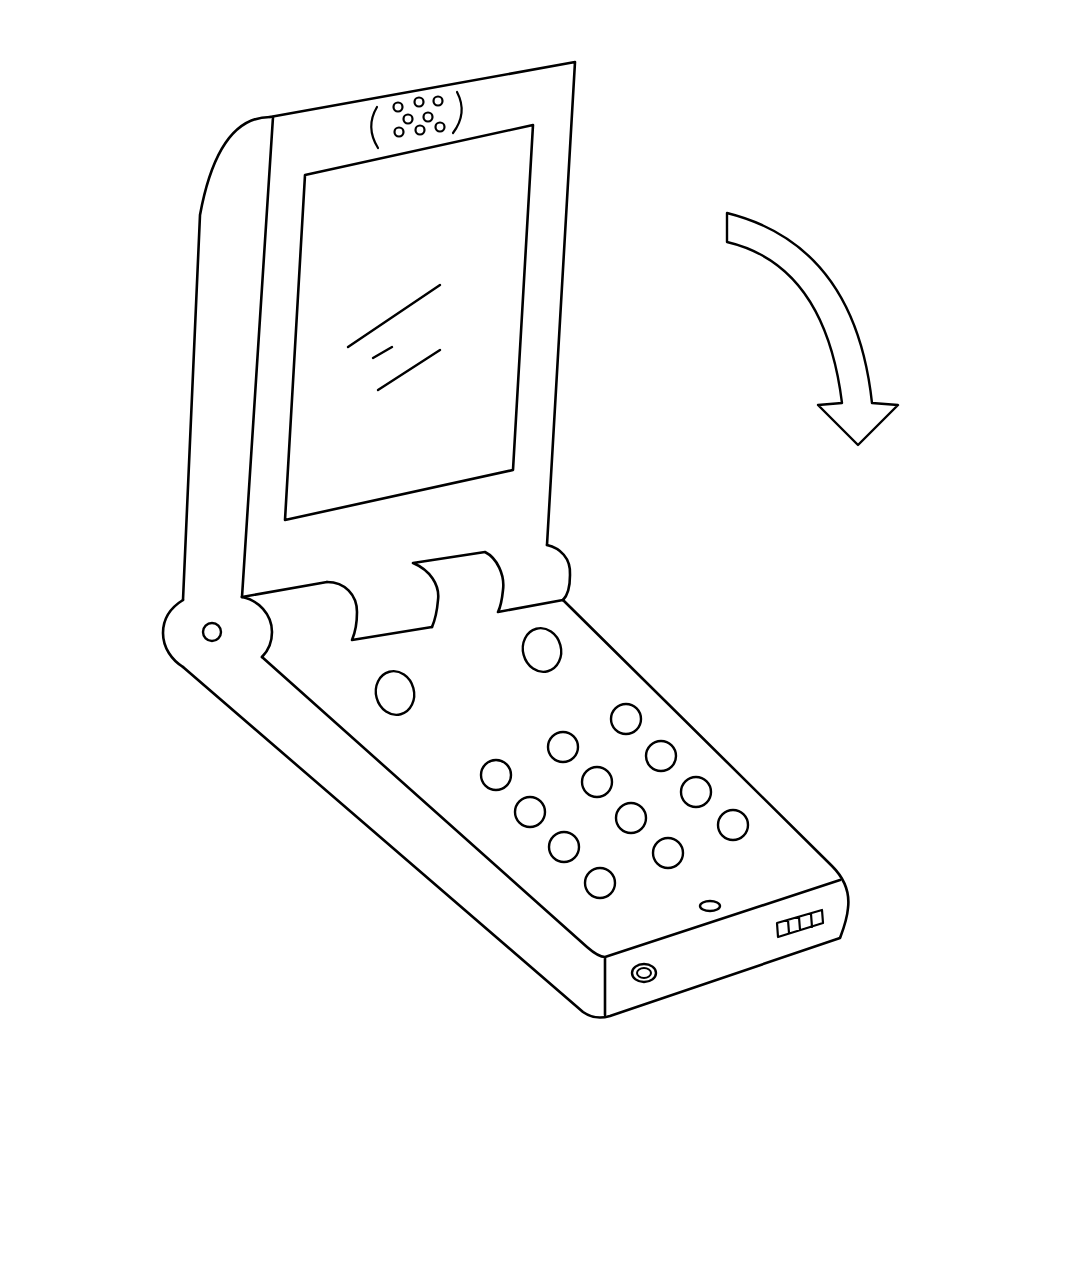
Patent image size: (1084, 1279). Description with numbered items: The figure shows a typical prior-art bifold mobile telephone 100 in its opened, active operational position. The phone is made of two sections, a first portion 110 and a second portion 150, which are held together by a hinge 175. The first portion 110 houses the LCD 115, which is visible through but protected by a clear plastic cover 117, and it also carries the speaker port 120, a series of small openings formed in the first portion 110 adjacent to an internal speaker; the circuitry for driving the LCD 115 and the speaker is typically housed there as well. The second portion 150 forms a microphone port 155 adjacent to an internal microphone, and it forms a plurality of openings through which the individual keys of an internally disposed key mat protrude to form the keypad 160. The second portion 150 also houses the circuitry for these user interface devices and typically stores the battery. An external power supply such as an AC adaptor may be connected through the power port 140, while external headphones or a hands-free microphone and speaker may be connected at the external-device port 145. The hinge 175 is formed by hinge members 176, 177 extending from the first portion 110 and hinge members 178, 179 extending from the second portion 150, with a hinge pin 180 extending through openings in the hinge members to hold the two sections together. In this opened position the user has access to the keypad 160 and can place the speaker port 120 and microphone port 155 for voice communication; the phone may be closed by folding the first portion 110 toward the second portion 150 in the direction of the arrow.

The mobile telephone 100 is at (310, 920).
The first portion 110 is at (573, 100).
The LCD 115 is at (480, 212).
The clear plastic cover 117 is at (485, 325).
The speaker port 120 is at (427, 102).
The power port 140 is at (646, 982).
The external-device port 145 is at (803, 927).
The second portion 150 is at (815, 843).
The microphone port 155 is at (712, 917).
The keypad 160 is at (682, 773).
The hinge 175 is at (607, 567).
The hinge member 176 is at (380, 597).
The hinge member 177 is at (522, 557).
The hinge member 178 is at (290, 635).
The hinge member 179 is at (463, 607).
The hinge pin 180 is at (207, 640).